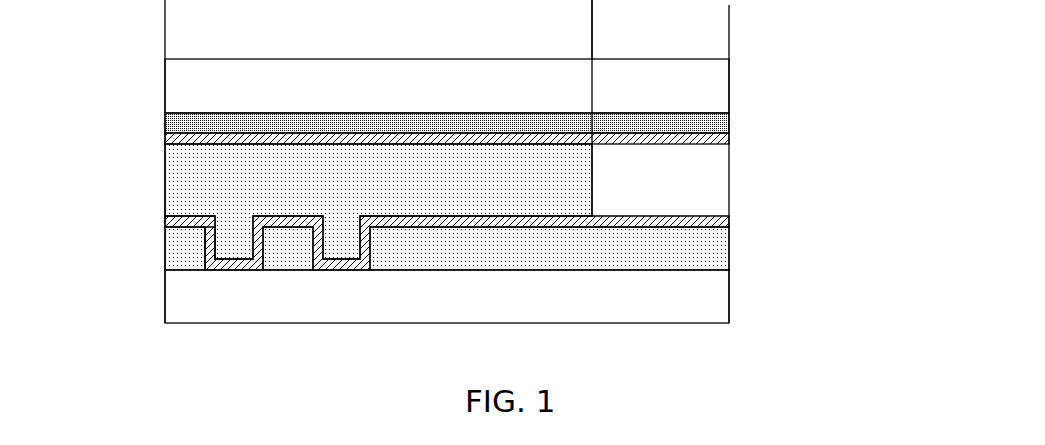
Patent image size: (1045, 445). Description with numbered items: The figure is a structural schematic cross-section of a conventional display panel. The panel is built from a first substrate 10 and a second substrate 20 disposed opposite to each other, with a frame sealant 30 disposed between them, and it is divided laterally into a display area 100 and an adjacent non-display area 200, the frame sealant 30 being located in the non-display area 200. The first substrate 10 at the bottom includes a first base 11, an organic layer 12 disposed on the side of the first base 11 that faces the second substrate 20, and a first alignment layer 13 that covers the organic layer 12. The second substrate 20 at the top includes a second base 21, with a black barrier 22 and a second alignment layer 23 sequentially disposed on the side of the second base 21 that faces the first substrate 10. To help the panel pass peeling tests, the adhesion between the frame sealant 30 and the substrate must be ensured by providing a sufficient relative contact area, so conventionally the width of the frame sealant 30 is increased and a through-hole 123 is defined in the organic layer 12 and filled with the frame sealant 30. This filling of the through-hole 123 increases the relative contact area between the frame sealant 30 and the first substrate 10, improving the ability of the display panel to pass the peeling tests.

The first substrate 10 is at (555, 267).
The first base 11 is at (729, 296).
The organic layer 12 is at (729, 255).
The first alignment layer 13 is at (729, 223).
The through-hole 123 is at (215, 242).
The second substrate 20 is at (557, 108).
The second base 21 is at (729, 82).
The black barrier 22 is at (729, 122).
The second alignment layer 23 is at (729, 143).
The frame sealant 30 is at (164, 185).
The display area 100 is at (729, 32).
The non-display area 200 is at (592, 32).